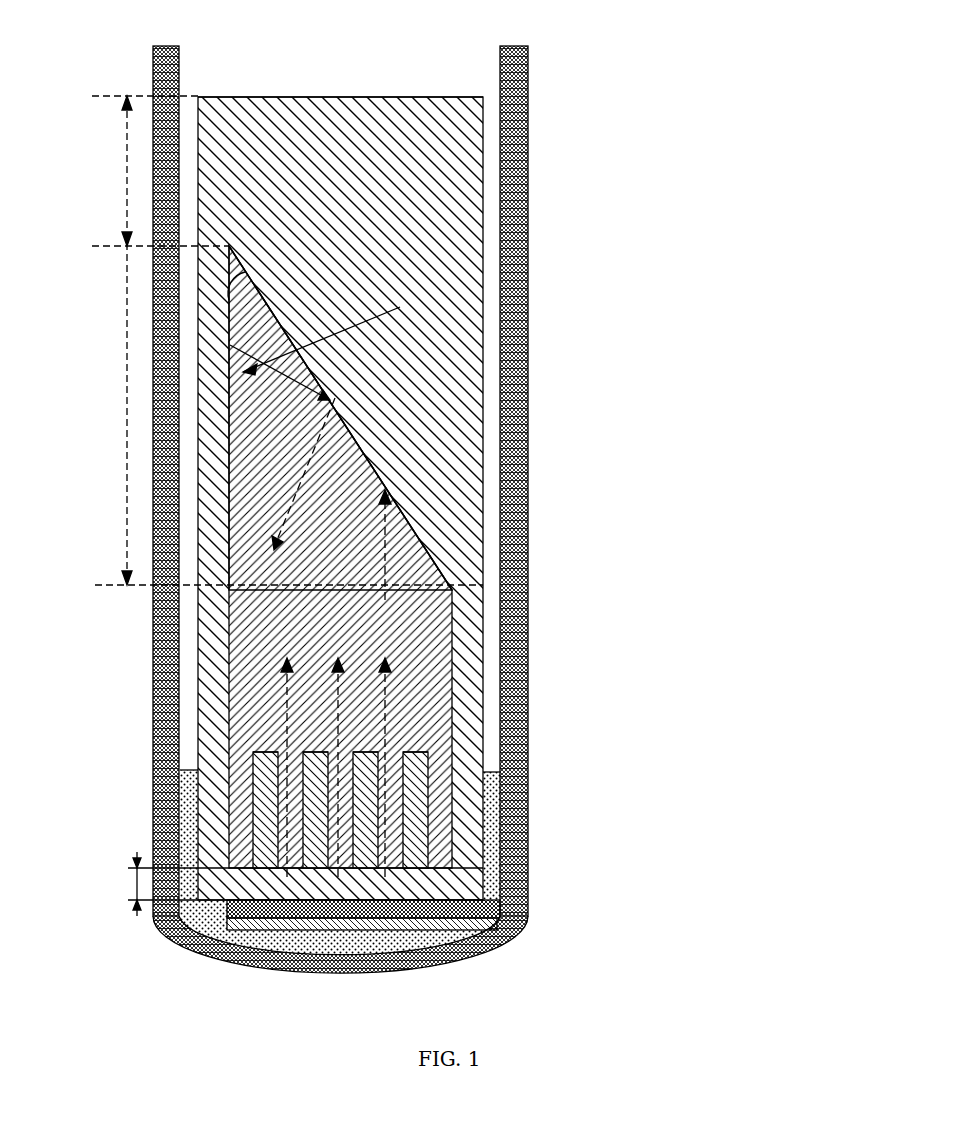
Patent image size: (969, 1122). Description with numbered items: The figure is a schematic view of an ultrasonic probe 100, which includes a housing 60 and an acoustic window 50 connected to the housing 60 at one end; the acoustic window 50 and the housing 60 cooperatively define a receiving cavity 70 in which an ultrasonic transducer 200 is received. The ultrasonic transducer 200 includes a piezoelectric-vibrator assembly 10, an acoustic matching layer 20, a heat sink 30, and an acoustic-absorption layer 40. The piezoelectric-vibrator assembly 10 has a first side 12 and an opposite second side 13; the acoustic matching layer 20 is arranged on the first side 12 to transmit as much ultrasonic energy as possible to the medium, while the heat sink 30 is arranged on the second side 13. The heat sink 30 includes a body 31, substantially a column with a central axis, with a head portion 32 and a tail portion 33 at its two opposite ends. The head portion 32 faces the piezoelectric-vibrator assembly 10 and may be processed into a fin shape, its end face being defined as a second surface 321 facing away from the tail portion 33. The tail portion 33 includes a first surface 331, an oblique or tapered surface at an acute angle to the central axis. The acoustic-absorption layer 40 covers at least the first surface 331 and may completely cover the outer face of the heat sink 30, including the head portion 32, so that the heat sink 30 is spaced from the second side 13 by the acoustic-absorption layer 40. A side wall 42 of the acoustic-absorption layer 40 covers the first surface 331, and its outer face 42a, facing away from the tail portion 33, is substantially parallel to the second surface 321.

The ultrasonic probe 100 is at (610, 86).
The housing 60 is at (152, 640).
The receiving cavity 70 is at (490, 352).
The ultrasonic transducer 200 is at (650, 967).
The piezoelectric-vibrator assembly 10 is at (505, 911).
The first side 12 is at (510, 927).
The acoustic matching layer 20 is at (510, 940).
The acoustic window 50 is at (165, 906).
The second side 13 is at (492, 866).
The acoustic-absorption layer 40 is at (465, 817).
The side wall 42 is at (380, 270).
The outer face 42a is at (316, 92).
The heat sink 30 is at (788, 820).
The body 31 is at (447, 617).
The tail portion 33 is at (430, 565).
The first surface 331 is at (415, 528).
The head portion 32 is at (430, 800).
The second surface 321 is at (445, 857).